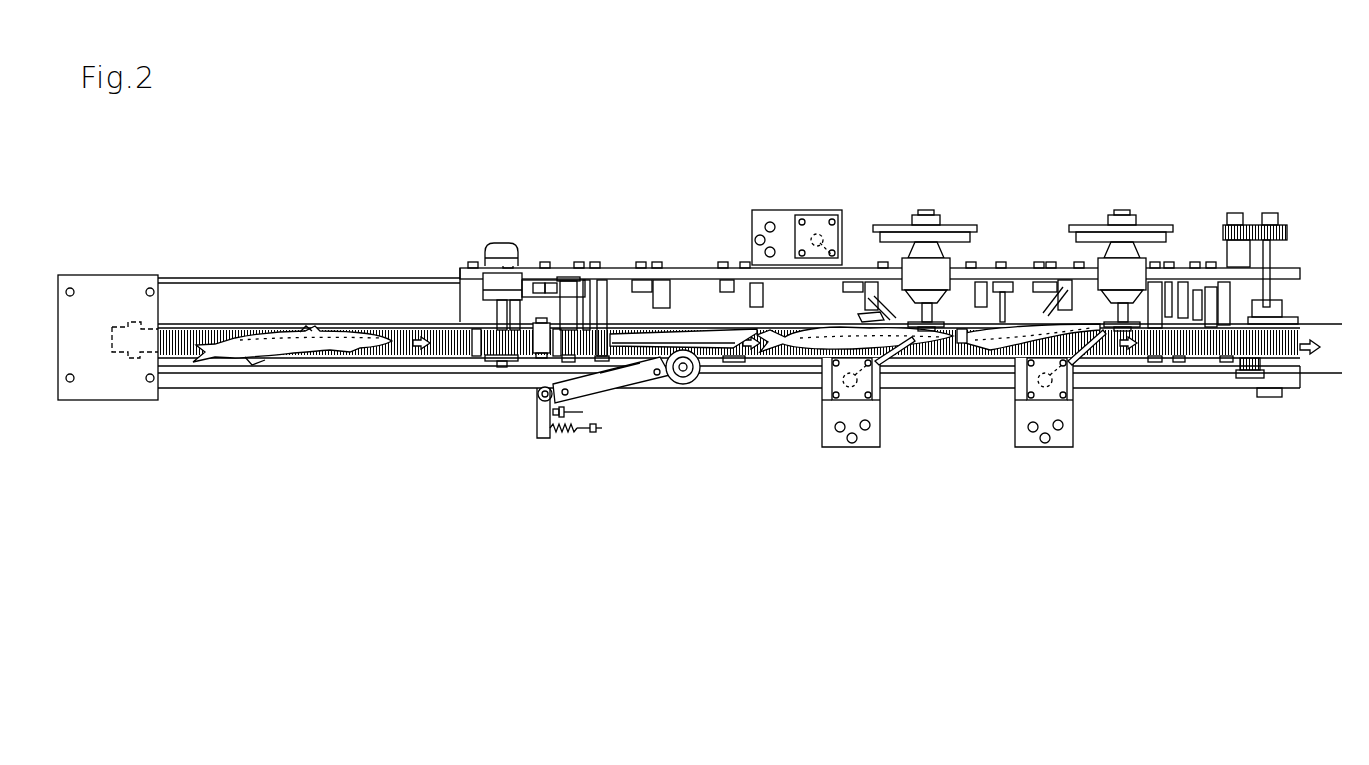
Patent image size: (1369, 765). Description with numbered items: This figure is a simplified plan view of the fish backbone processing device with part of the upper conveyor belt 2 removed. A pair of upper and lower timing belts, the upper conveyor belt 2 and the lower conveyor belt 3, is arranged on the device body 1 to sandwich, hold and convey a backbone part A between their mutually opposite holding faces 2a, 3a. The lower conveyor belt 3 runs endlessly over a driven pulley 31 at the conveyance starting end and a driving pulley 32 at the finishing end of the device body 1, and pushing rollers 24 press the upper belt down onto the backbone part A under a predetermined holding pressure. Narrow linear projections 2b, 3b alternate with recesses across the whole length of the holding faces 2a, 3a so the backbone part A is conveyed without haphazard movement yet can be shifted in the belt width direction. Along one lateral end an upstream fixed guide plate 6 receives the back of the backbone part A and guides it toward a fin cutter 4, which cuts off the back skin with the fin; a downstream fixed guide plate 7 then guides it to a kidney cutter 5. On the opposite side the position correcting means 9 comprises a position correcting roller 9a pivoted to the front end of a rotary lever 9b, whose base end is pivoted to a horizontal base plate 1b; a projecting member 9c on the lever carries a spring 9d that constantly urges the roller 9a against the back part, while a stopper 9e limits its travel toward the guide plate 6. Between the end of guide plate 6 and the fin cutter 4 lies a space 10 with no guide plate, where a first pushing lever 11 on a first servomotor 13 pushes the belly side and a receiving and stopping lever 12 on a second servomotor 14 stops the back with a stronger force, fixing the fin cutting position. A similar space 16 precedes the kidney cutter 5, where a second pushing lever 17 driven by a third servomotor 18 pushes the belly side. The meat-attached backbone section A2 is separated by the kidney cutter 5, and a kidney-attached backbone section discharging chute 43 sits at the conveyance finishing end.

The device body 1 is at (373, 390).
The horizontal base plate 1b is at (537, 432).
The upper conveyor belt 2 is at (503, 357).
The holding face 2a is at (492, 328).
The linear projection 2b is at (733, 362).
The lower conveyor belt 3 is at (440, 356).
The holding face 3a is at (412, 334).
The linear projection 3b is at (438, 332).
The fin cutter 4 is at (960, 323).
The kidney cutter 5 is at (1093, 323).
The upstream fixed guide plate 6 is at (615, 328).
The downstream fixed guide plate 7 is at (1018, 327).
The position correcting means 9 is at (612, 396).
The position correcting roller 9a is at (693, 380).
The rotary lever 9b is at (640, 375).
The projecting member 9c is at (551, 436).
The spring 9d is at (570, 430).
The stopper 9e is at (590, 412).
The space 10 is at (873, 320).
The first pushing lever 11 is at (900, 352).
The receiving and stopping lever 12 is at (895, 305).
The first servomotor 13 is at (850, 386).
The second servomotor 14 is at (807, 223).
The space 16 is at (1063, 313).
The second pushing lever 17 is at (1100, 347).
The third servomotor 18 is at (1068, 387).
The pushing roller 24 is at (537, 352).
The driven pulley 31 is at (122, 363).
The driving pulley 32 is at (1273, 372).
The kidney-attached backbone section discharging chute 43 is at (1322, 367).
The backbone part A is at (268, 357).
The meat-attached backbone section A2 is at (1000, 345).